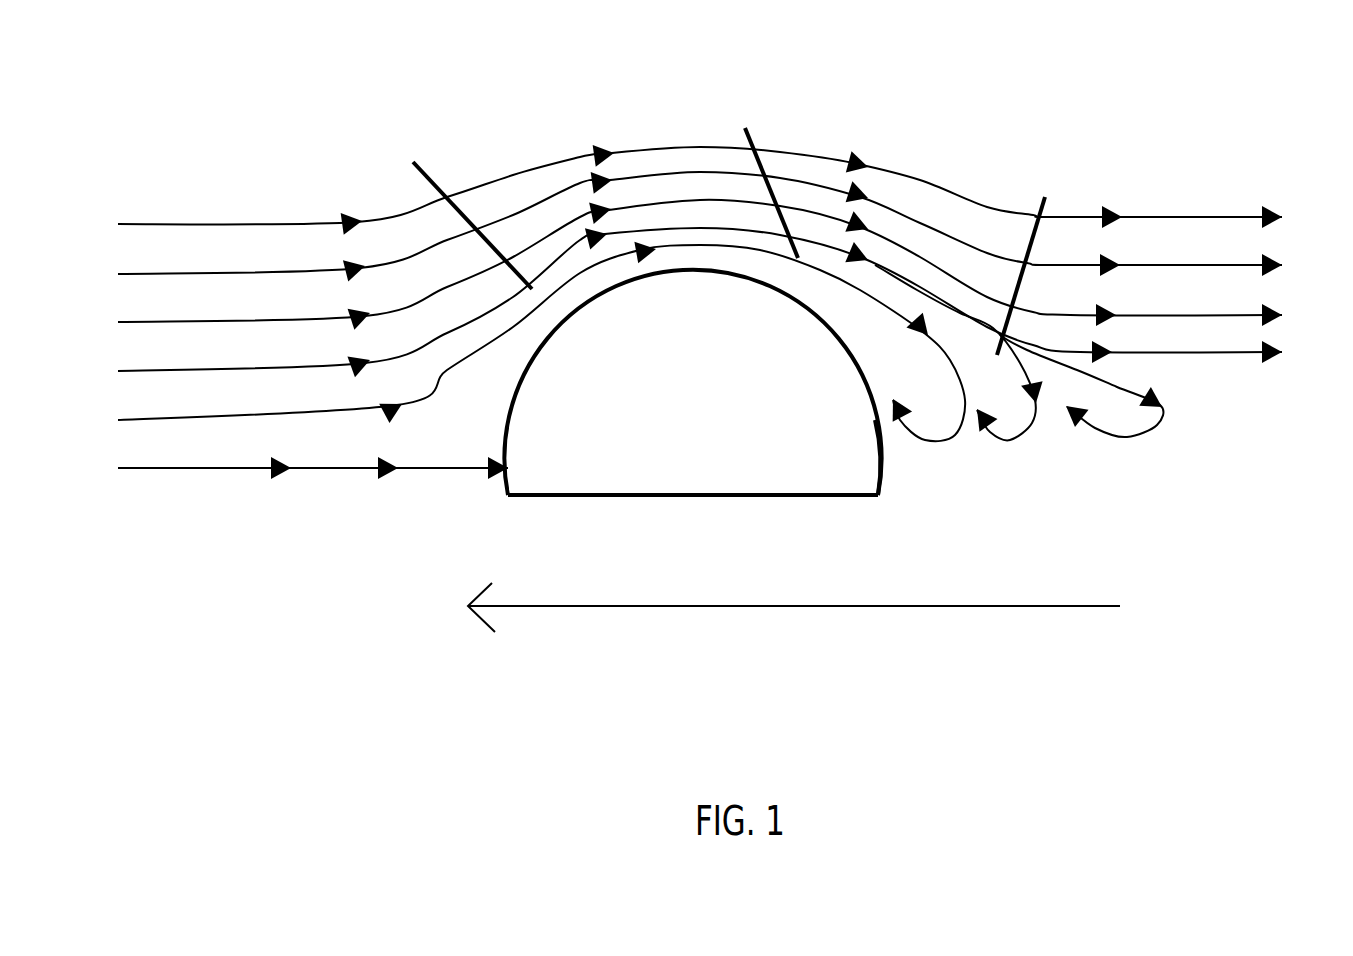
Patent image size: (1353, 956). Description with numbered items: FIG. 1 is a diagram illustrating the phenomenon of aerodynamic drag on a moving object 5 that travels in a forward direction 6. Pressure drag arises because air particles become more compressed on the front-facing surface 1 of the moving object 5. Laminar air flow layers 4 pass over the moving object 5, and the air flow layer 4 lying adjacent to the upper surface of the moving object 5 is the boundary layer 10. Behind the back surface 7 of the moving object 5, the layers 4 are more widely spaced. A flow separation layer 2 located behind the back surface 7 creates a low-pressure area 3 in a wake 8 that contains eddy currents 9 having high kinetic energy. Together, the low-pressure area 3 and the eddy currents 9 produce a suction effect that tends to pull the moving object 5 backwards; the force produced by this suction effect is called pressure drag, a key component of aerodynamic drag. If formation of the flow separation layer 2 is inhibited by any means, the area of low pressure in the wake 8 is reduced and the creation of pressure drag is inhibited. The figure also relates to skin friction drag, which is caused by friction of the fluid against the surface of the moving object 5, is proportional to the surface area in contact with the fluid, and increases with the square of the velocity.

The front-facing surface 1 is at (522, 375).
The flow separation layer 2 is at (833, 298).
The low-pressure area 3 is at (1022, 363).
The laminar air flow layers 4 is at (197, 222).
The moving object 5 is at (594, 500).
The forward direction 6 is at (635, 607).
The back surface 7 is at (883, 438).
The wake 8 is at (960, 452).
The eddy currents 9 is at (962, 387).
The boundary layer 10 is at (683, 245).